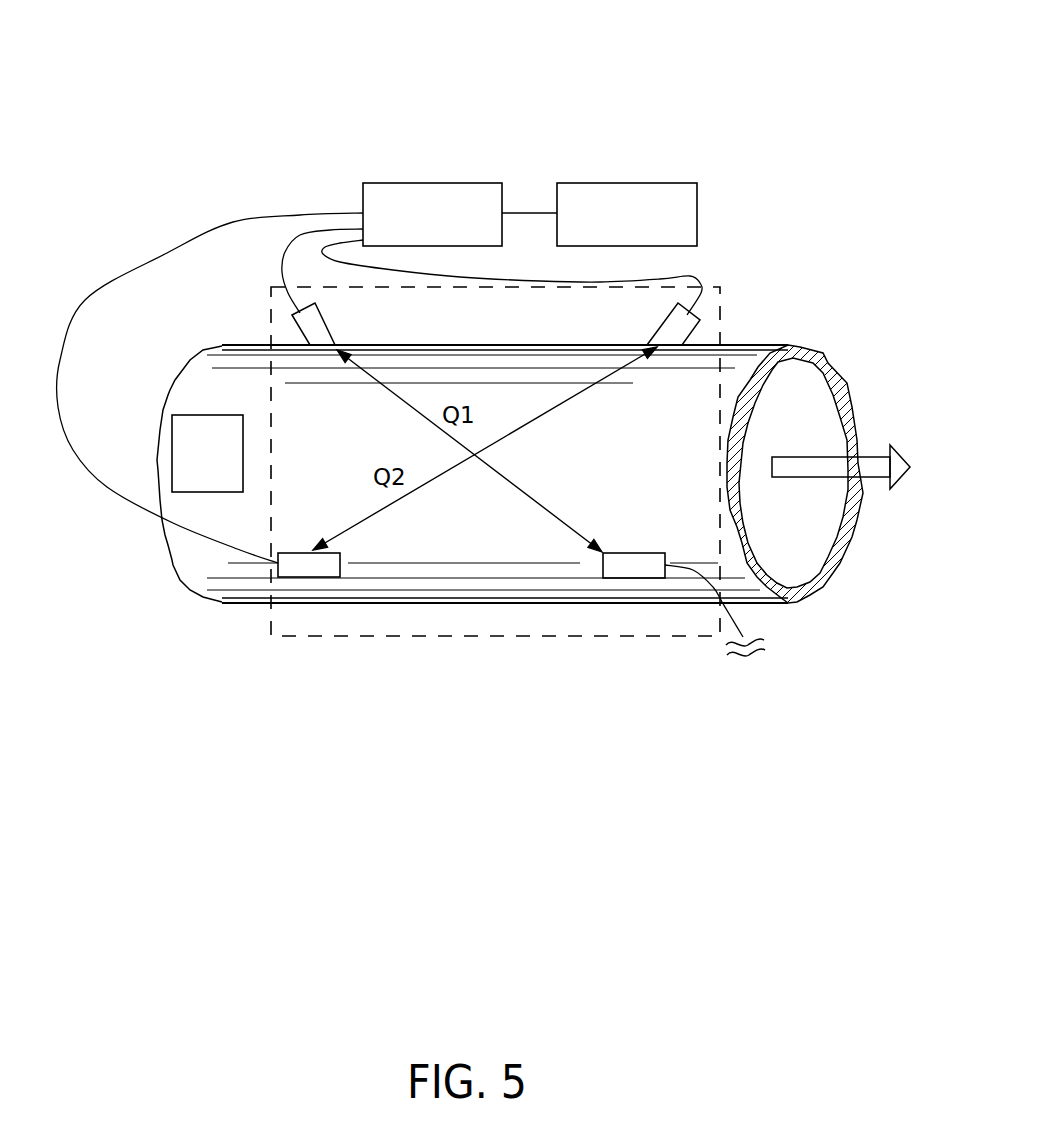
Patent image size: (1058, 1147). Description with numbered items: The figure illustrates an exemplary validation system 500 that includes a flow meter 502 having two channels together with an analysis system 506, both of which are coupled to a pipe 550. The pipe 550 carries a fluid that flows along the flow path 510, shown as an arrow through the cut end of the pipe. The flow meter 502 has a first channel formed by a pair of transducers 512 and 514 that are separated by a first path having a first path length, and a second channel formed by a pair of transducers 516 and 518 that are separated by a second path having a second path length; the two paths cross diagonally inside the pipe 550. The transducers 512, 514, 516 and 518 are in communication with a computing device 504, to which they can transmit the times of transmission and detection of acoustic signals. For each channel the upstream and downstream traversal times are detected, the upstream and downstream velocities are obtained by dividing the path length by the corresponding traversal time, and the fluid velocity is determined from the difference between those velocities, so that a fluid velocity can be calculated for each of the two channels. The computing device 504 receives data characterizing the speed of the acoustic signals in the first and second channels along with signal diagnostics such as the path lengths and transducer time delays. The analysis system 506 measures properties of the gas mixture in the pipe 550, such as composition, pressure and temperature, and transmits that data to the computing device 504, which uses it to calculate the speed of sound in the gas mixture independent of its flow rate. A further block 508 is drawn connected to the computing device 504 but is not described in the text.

The validation system 500 is at (134, 69).
The flow meter 502 is at (336, 445).
The computing device 504 is at (452, 223).
The analysis system 506 is at (229, 463).
The processing unit 508 is at (649, 223).
The flow path 510 is at (868, 467).
The transducer 512 is at (315, 333).
The transducer 514 is at (655, 565).
The transducer 516 is at (667, 333).
The transducer 518 is at (320, 567).
The pipe 550 is at (739, 339).